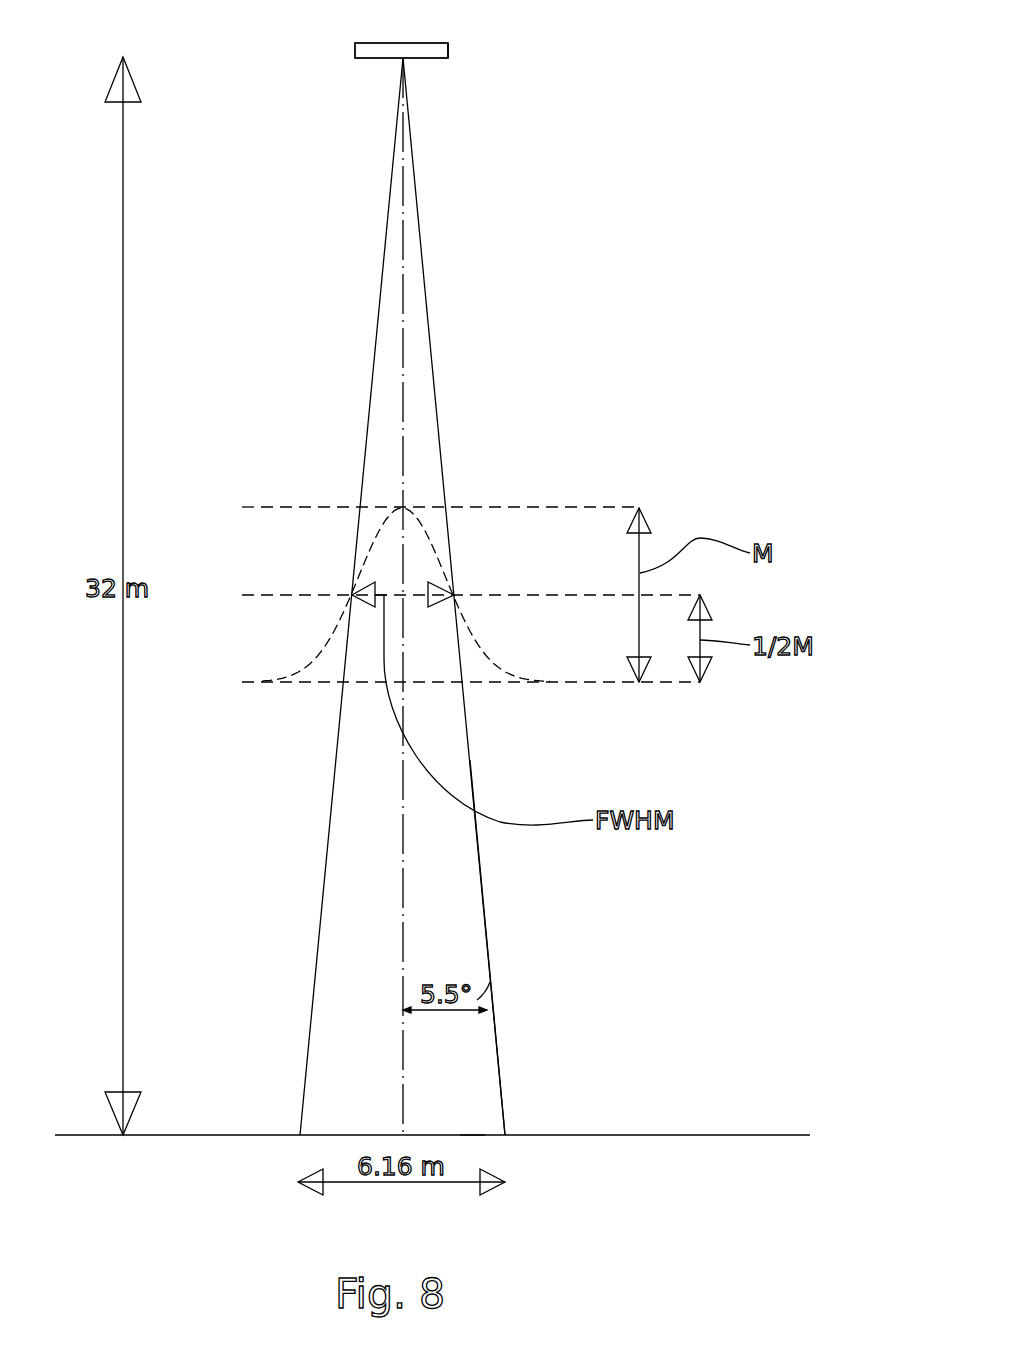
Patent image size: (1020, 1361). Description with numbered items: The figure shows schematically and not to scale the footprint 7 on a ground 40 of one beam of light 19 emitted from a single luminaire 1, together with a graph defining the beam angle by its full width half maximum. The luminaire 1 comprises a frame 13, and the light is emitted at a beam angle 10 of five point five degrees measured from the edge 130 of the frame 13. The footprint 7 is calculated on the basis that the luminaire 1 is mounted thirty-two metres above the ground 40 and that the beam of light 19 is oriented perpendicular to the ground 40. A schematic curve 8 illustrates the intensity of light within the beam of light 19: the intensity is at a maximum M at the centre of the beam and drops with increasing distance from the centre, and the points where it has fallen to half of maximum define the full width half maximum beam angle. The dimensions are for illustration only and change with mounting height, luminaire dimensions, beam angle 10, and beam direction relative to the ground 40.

The luminaire 1 is at (337, 46).
The frame 13 is at (438, 48).
The edge of the frame 130 is at (448, 51).
The beam of light 19 is at (422, 394).
The schematic curve 8 is at (497, 656).
The beam angle 10 is at (488, 982).
The ground 40 is at (472, 1135).
The footprint 7 is at (520, 1135).